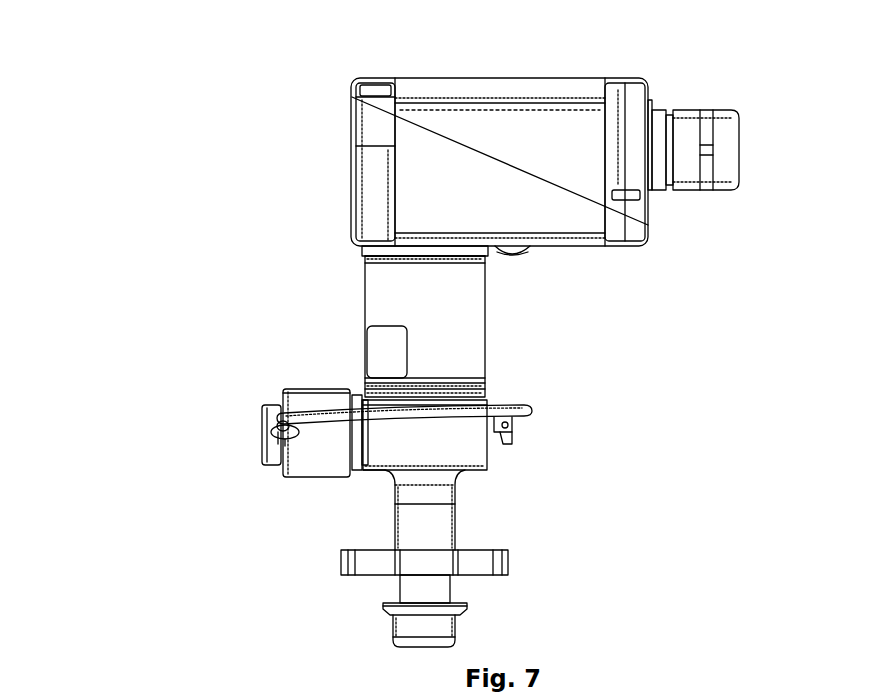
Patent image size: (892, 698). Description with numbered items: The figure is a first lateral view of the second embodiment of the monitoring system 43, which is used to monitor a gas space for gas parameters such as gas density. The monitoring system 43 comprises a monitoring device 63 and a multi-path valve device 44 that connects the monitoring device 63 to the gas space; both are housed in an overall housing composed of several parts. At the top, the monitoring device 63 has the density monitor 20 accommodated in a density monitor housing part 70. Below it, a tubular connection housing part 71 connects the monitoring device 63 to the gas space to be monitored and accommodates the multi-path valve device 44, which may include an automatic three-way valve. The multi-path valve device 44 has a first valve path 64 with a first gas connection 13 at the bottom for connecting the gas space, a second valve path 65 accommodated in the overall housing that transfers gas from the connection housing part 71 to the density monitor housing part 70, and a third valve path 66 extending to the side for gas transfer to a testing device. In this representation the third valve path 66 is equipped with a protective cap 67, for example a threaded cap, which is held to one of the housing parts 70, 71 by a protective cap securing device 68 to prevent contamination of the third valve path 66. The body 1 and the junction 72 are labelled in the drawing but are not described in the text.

The sensor body block 1 is at (455, 442).
The first gas connection 13 is at (397, 647).
The density monitor 20 is at (428, 173).
The monitoring system 43 is at (151, 298).
The multi-path valve device 44 is at (624, 431).
The monitoring device 63 is at (478, 122).
The first valve path 64 is at (447, 496).
The second valve path 65 is at (458, 338).
The third valve path 66 is at (264, 374).
The protective cap 67 is at (305, 445).
The protective cap securing device 68 is at (510, 408).
The density monitor housing part 70 is at (535, 125).
The connection housing part 71 is at (395, 300).
The junction 72 is at (360, 486).